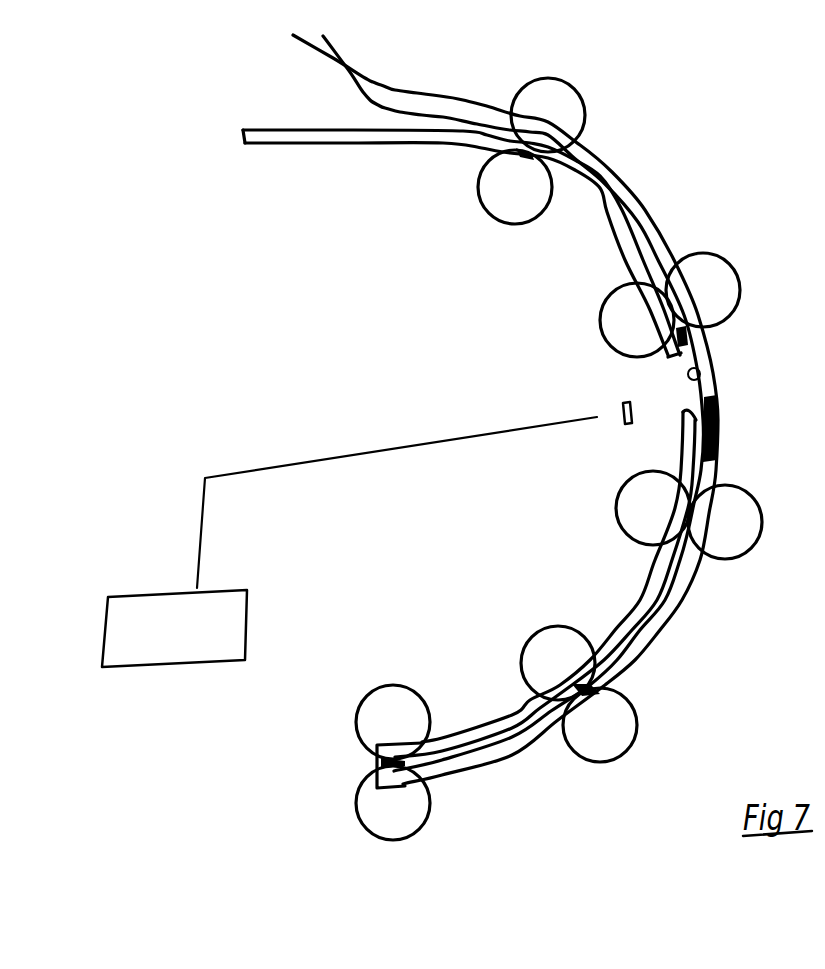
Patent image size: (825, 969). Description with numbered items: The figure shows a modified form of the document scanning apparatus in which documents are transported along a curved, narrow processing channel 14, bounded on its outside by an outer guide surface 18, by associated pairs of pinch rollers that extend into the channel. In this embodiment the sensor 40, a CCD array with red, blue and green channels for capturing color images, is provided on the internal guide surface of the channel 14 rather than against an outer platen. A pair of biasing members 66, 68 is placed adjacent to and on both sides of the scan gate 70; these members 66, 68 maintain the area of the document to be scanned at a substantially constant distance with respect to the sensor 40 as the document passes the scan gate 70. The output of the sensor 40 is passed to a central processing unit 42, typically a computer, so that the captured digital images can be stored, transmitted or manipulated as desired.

The processing channel 14 is at (630, 237).
The outer guide surface 18 is at (713, 383).
The sensor 40 is at (600, 425).
The central processing unit 42 is at (233, 597).
The biasing member 66 is at (722, 423).
The biasing member 68 is at (690, 336).
The scan gate 70 is at (664, 386).